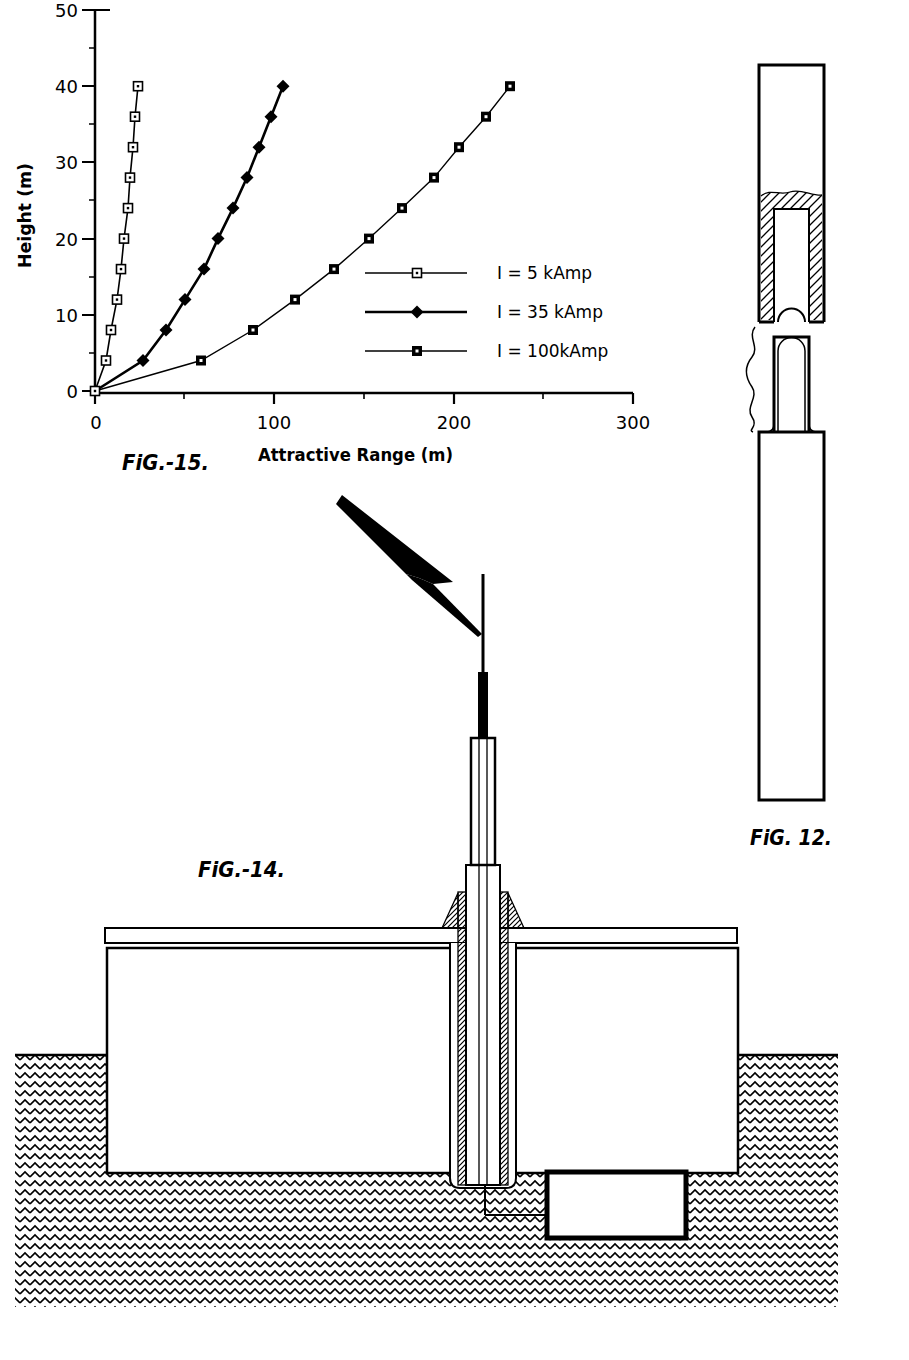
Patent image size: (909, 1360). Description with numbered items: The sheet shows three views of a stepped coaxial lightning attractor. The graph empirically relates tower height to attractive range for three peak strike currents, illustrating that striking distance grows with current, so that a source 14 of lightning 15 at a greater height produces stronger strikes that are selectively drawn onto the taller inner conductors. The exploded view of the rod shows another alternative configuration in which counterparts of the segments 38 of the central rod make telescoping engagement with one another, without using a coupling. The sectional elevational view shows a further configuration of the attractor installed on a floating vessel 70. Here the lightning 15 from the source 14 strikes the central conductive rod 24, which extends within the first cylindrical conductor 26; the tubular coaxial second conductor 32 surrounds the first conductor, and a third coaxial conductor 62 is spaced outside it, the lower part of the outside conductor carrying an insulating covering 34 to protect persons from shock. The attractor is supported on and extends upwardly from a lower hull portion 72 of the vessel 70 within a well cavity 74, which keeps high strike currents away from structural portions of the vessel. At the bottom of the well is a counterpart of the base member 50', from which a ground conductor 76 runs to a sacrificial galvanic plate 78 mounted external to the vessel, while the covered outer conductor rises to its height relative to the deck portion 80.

In FIG. 14, the source 14 is at (342, 497).
In FIG. 14, the lightning 15 is at (412, 577).
In FIG. 14, the central conductive rod 24 is at (485, 603).
In FIG. 14, the first cylindrical conductor 26 is at (487, 710).
In FIG. 14, the tubular coaxial second conductor 32 is at (489, 802).
In FIG. 14, the covering 34 is at (506, 908).
In FIG. 12, the segments 38 is at (758, 252).
In FIG. 14, the base member 50' is at (530, 1175).
In FIG. 14, the third coaxial conductor 62 is at (466, 875).
In FIG. 14, the floating vessel 70 is at (738, 996).
In FIG. 14, the lower hull portion 72 is at (380, 1166).
In FIG. 14, the well cavity 74 is at (455, 1074).
In FIG. 14, the ground conductor 76 is at (517, 1218).
In FIG. 14, the sacrificial galvanic plate 78 is at (622, 1212).
In FIG. 14, the deck portion 80 is at (542, 932).